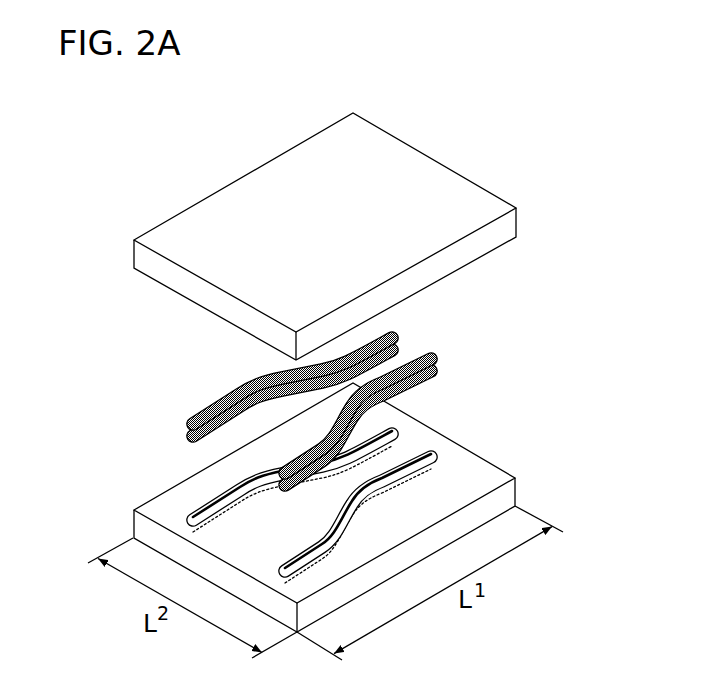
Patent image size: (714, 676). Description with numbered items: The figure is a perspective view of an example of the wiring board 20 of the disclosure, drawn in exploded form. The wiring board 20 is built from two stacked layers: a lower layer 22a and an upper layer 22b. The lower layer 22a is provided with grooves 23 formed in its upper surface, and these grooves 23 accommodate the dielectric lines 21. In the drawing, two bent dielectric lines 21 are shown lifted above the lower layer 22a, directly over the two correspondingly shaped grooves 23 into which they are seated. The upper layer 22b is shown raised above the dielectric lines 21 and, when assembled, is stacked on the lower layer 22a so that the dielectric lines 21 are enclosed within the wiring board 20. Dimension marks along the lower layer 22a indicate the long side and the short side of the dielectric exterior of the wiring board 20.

The wiring board 20 is at (162, 169).
The dielectric lines 21 is at (440, 352).
The lower layer 22a is at (465, 485).
The upper layer 22b is at (465, 197).
The groove 23 is at (445, 445).